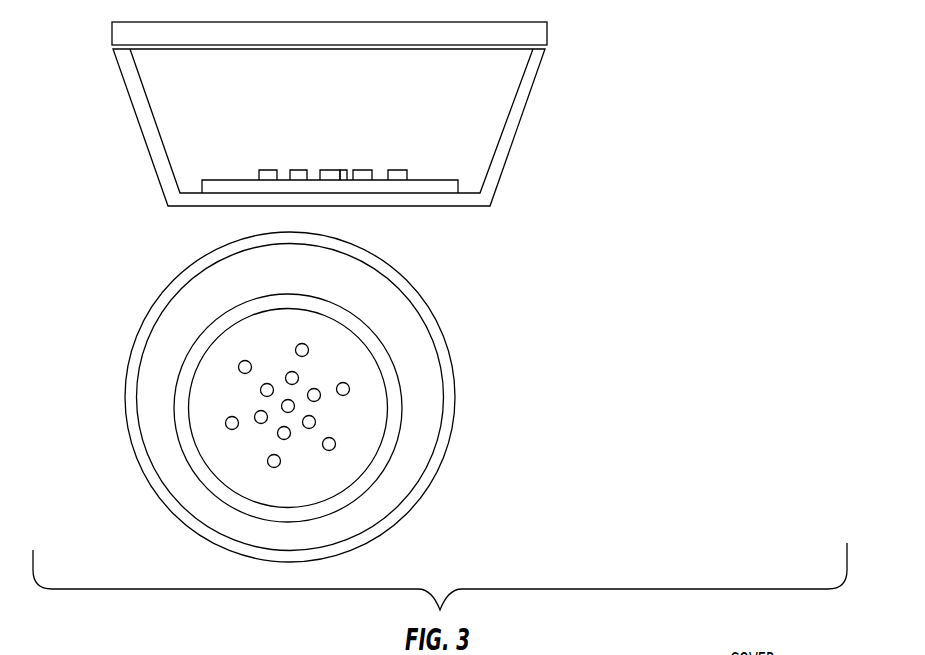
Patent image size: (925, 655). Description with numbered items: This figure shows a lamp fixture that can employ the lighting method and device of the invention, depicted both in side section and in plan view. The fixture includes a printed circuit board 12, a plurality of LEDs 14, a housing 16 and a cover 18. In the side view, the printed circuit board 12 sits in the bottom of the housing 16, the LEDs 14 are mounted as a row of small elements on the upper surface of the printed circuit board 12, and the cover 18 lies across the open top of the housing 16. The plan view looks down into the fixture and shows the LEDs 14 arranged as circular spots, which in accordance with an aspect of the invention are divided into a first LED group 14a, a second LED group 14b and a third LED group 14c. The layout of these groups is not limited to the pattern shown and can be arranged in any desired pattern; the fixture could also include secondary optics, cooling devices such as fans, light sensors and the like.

The printed circuit board 12 is at (467, 183).
The LEDs 14 is at (340, 169).
The first LED group 14a is at (350, 387).
The second LED group 14b is at (316, 420).
The third LED group 14c is at (293, 412).
The housing 16 is at (510, 127).
The cover 18 is at (533, 32).